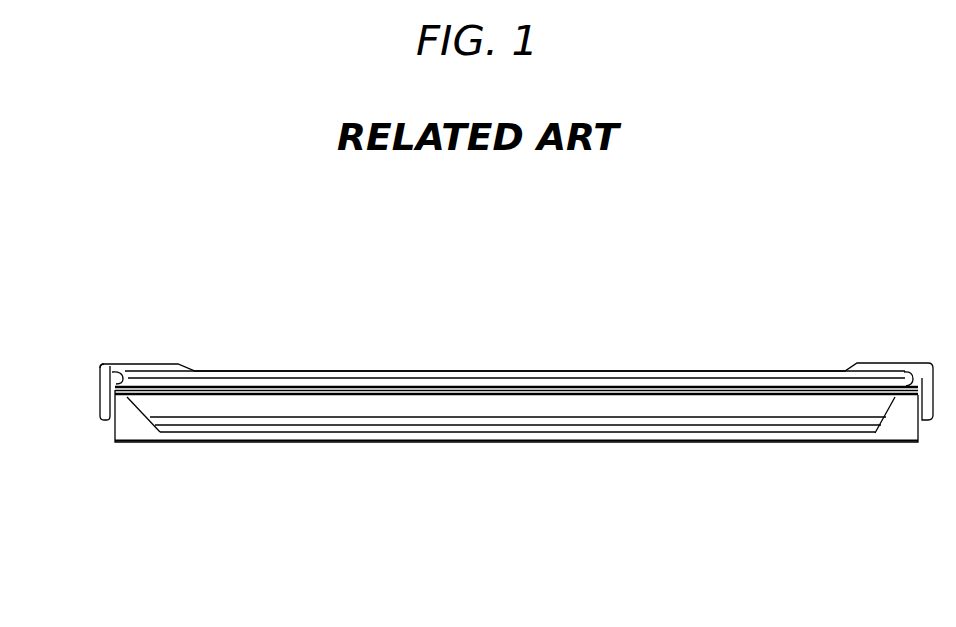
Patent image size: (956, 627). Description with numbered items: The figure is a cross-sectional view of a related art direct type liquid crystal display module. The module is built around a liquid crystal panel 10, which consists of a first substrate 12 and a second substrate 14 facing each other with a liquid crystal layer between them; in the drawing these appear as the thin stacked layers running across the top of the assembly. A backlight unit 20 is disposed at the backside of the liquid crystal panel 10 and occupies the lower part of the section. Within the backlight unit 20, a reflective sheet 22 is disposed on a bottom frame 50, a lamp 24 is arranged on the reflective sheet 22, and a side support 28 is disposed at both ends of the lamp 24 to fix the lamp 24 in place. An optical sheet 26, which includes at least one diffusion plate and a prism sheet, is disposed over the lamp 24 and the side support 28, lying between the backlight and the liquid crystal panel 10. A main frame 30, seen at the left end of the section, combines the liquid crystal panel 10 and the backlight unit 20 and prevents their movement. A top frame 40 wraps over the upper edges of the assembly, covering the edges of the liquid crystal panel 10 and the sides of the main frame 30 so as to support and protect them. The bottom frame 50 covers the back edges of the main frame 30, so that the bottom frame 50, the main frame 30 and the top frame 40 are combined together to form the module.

The liquid crystal panel 10 is at (515, 298).
The first substrate 12 is at (460, 370).
The second substrate 14 is at (492, 265).
The backlight unit 20 is at (516, 497).
The reflective sheet 22 is at (495, 445).
The lamp 24 is at (430, 426).
The optical sheet 26 is at (390, 400).
The side support 28 is at (138, 443).
The main frame 30 is at (103, 396).
The top frame 40 is at (142, 363).
The bottom frame 50 is at (510, 525).